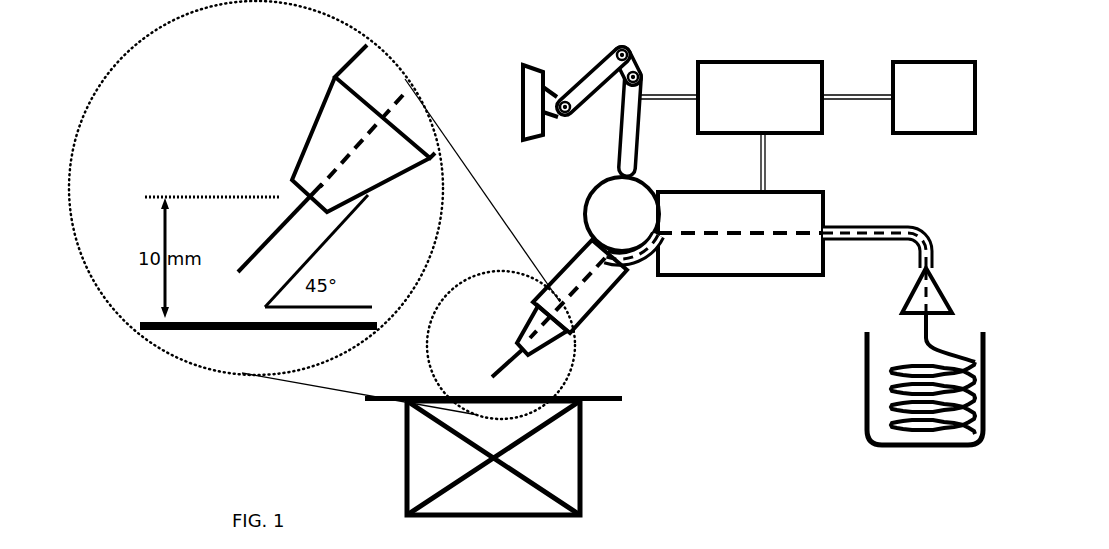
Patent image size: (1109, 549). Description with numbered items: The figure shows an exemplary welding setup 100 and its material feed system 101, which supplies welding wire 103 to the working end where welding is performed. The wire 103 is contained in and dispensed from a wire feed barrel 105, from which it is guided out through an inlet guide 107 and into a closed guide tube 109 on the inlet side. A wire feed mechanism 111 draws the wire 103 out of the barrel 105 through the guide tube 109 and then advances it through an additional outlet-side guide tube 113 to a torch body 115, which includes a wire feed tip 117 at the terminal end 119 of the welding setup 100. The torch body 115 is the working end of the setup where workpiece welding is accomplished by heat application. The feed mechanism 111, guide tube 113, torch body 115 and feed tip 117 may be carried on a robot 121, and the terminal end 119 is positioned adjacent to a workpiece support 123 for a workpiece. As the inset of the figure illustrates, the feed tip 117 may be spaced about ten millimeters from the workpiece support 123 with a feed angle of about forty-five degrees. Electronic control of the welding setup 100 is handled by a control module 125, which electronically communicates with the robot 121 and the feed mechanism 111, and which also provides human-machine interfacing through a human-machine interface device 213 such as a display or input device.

The welding setup 100 is at (708, 37).
The material feed system 101 is at (778, 322).
The welding wire 103 is at (260, 243).
The wire feed barrel 105 is at (863, 387).
The inlet guide 107 is at (910, 290).
The guide tube 109 is at (838, 222).
The wire feed mechanism 111 is at (757, 275).
The guide tube 113 is at (637, 247).
The torch body 115 is at (349, 60).
The wire feed tip 117 is at (330, 117).
The terminal end 119 is at (622, 315).
The robot 121 is at (560, 45).
The workpiece support 123 is at (323, 332).
The control module 125 is at (780, 110).
The human-machine interface device 213 is at (953, 110).